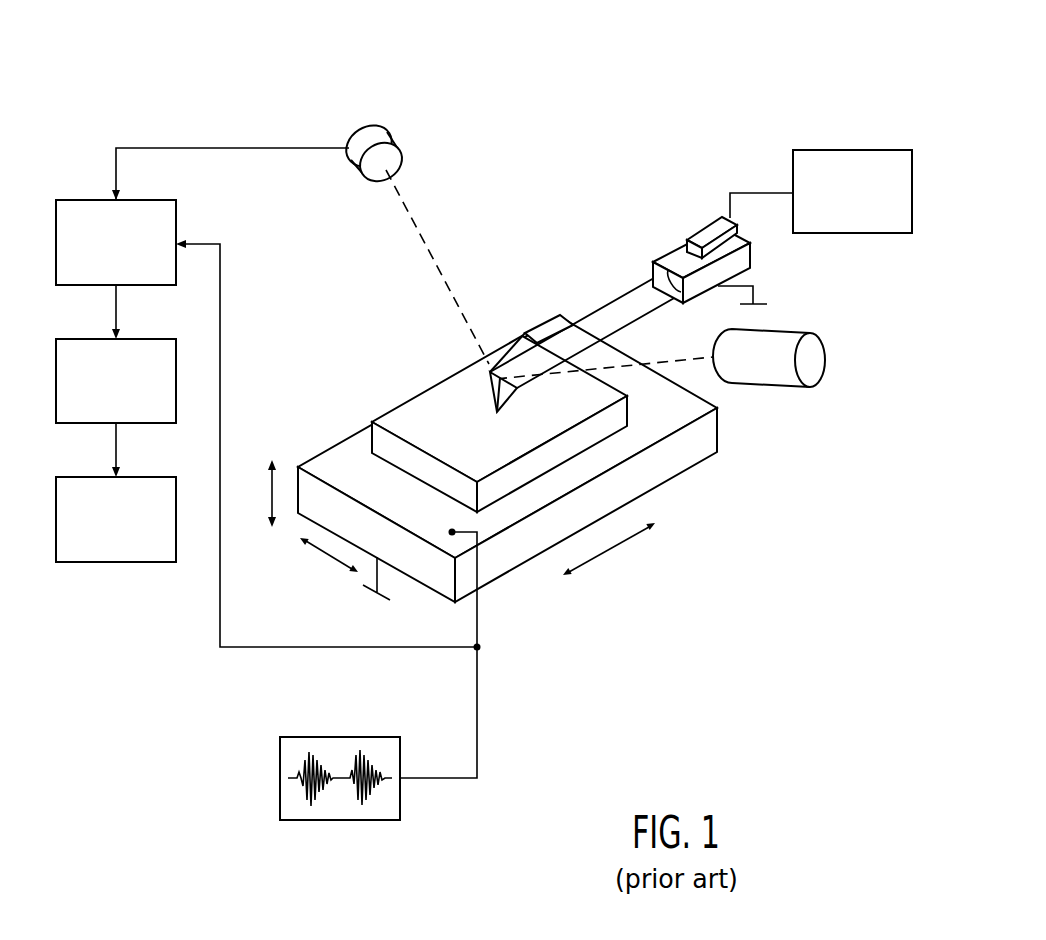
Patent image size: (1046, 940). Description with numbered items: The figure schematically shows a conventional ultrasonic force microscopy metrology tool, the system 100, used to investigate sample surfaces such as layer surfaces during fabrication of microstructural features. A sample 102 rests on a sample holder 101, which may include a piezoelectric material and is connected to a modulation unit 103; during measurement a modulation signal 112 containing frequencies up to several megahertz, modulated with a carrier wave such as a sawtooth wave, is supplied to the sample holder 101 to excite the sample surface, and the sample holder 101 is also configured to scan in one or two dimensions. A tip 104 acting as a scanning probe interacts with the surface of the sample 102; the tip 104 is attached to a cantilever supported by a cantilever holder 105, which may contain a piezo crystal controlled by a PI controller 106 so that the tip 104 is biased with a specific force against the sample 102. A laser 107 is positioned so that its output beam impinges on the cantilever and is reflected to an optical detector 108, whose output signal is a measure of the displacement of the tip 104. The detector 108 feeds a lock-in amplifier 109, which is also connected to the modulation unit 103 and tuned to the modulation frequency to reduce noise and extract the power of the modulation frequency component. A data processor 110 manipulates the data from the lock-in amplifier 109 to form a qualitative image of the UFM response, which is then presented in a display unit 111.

The system 100 is at (190, 85).
The sample holder 101 is at (665, 465).
The sample 102 is at (417, 407).
The modulation unit 103 is at (298, 736).
The tip 104 is at (498, 395).
The cantilever holder 105 is at (672, 258).
The PI controller 106 is at (812, 150).
The laser 107 is at (786, 328).
The optical detector 108 is at (392, 138).
The lock-in amplifier 109 is at (72, 199).
The data processor 110 is at (72, 338).
The display unit 111 is at (72, 476).
The modulation signal 112 is at (478, 692).